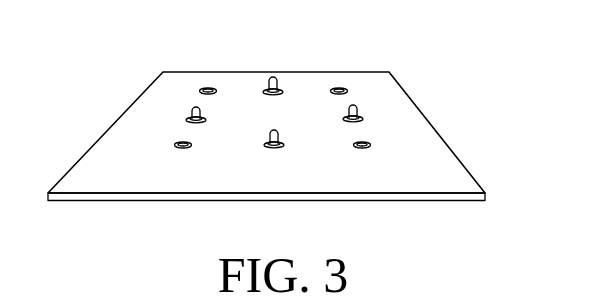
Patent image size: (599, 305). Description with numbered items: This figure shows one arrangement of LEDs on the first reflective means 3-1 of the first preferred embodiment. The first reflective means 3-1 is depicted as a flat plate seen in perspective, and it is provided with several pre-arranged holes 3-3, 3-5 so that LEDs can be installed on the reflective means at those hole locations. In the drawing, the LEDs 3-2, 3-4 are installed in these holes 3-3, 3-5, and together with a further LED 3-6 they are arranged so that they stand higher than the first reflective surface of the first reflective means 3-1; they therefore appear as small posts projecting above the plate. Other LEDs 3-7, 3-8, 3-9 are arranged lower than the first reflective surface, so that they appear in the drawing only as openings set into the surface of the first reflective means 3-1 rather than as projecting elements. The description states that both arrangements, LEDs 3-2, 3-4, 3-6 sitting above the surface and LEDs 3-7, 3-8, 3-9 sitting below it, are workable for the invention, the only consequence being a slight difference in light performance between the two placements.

The first reflective means 3-1 is at (133, 143).
The LED 3-2 is at (265, 136).
The pre-arranged hole 3-3 is at (282, 143).
The LED 3-4 is at (357, 110).
The pre-arranged hole 3-5 is at (363, 118).
The LED 3-6 is at (275, 77).
The LED 3-7 is at (208, 88).
The LED 3-8 is at (342, 88).
The LED 3-9 is at (362, 148).